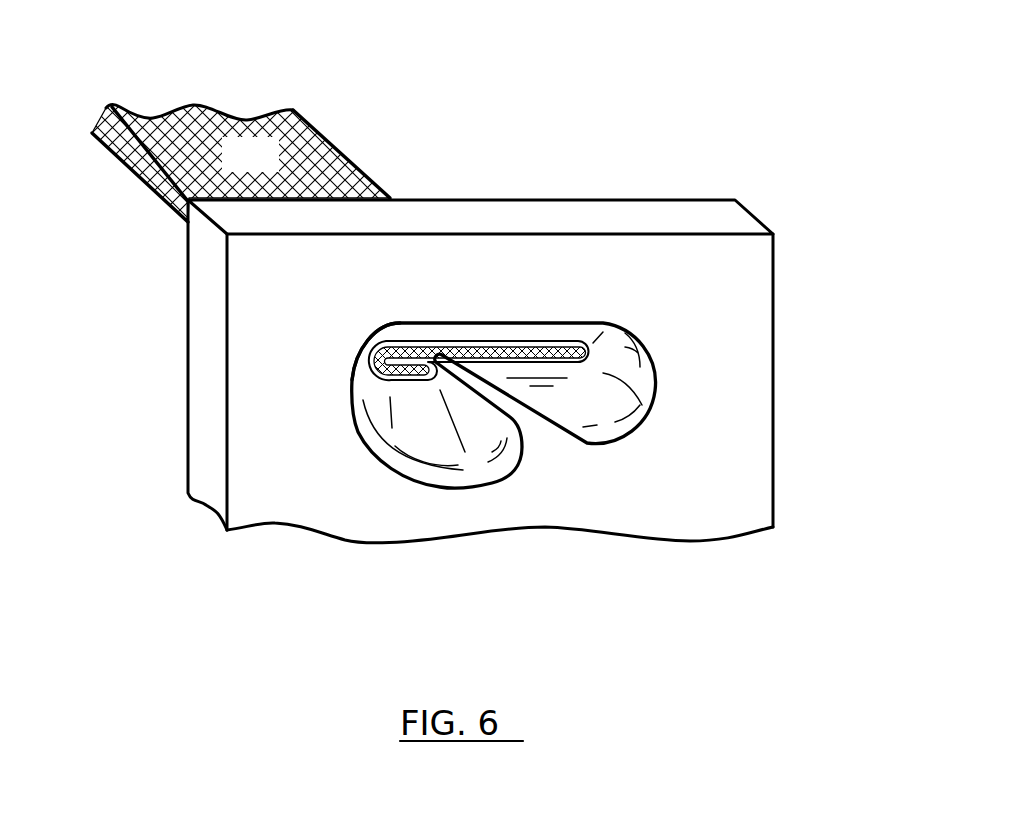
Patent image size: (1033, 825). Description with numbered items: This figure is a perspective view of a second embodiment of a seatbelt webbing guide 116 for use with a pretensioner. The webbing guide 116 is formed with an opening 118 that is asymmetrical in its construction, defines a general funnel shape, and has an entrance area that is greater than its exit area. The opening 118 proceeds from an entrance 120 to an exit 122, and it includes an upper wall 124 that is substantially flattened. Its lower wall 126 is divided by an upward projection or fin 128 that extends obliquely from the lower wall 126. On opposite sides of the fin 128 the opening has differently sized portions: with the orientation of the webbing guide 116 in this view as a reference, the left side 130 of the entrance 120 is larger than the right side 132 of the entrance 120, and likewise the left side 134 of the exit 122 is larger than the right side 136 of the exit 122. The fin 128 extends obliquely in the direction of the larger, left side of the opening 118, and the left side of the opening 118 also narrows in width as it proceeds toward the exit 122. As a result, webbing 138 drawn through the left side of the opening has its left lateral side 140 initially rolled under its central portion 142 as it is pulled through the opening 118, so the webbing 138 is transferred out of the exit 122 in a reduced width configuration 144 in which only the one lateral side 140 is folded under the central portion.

The webbing guide 116 is at (683, 83).
The opening 118 is at (597, 421).
The entrance 120 is at (387, 450).
The exit 122 is at (456, 346).
The upper wall 124 is at (503, 333).
The lower wall 126 is at (563, 407).
The fin 128 is at (485, 393).
The left side of the entrance 130 is at (447, 448).
The right side of the entrance 132 is at (630, 385).
The left side of the exit 134 is at (408, 392).
The right side of the exit 136 is at (577, 376).
The webbing 138 is at (271, 168).
The left lateral side 140 is at (150, 183).
The central portion 142 is at (163, 120).
The reduced width configuration 144 is at (377, 126).